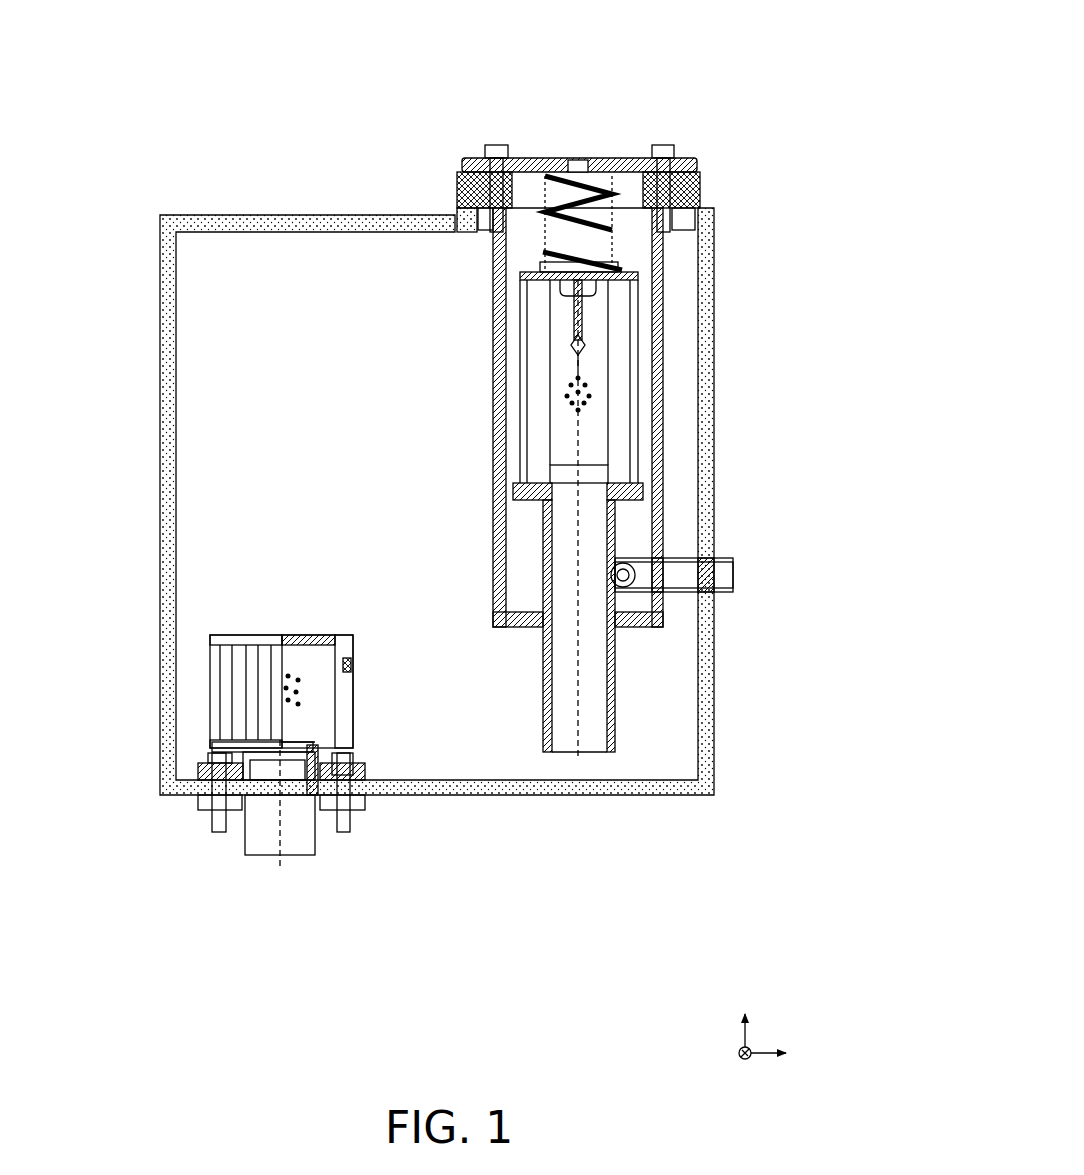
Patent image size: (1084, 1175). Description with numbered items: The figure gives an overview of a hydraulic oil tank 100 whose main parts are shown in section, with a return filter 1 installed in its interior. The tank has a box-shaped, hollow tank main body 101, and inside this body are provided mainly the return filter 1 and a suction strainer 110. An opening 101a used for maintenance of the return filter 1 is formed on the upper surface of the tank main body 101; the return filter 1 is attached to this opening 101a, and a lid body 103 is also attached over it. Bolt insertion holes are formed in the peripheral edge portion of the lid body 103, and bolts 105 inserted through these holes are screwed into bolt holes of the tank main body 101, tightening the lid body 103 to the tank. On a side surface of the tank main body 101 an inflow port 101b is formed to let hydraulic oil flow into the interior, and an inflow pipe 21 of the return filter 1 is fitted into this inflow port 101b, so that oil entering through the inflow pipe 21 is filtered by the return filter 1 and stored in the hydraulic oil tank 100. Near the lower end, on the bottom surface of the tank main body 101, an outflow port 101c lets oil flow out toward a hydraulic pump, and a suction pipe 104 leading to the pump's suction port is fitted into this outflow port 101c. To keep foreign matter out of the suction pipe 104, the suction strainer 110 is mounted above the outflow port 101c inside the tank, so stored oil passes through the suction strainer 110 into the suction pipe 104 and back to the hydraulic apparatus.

The hydraulic oil tank 100 is at (743, 29).
The return filter 1 is at (666, 468).
The tank main body 101 is at (379, 501).
The opening 101a is at (640, 192).
The inflow port 101b is at (719, 535).
The outflow port 101c is at (262, 793).
The lid body 103 is at (631, 150).
The suction pipe 104 is at (359, 819).
The bolts 105 is at (577, 146).
The suction strainer 110 is at (199, 691).
The inflow pipe 21 is at (707, 602).